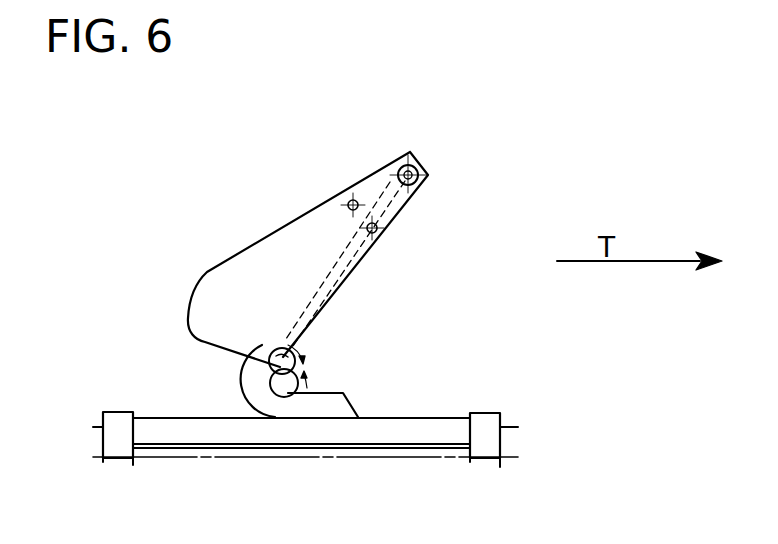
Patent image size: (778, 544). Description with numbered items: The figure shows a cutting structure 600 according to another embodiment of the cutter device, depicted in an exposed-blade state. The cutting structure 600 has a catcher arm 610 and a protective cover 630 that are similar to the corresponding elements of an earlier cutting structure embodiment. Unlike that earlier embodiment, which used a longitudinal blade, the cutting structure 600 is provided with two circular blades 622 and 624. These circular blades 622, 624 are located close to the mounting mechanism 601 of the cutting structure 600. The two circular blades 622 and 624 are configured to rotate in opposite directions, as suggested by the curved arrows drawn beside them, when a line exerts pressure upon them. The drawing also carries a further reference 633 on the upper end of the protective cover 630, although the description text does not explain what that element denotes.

The cutting structure 600 is at (376, 94).
The mounting mechanism 601 is at (430, 422).
The catcher arm 610 is at (268, 405).
The circular blade 622 is at (275, 364).
The circular blade 624 is at (289, 384).
The protective cover 630 is at (287, 252).
The pivot pin 633 is at (423, 163).